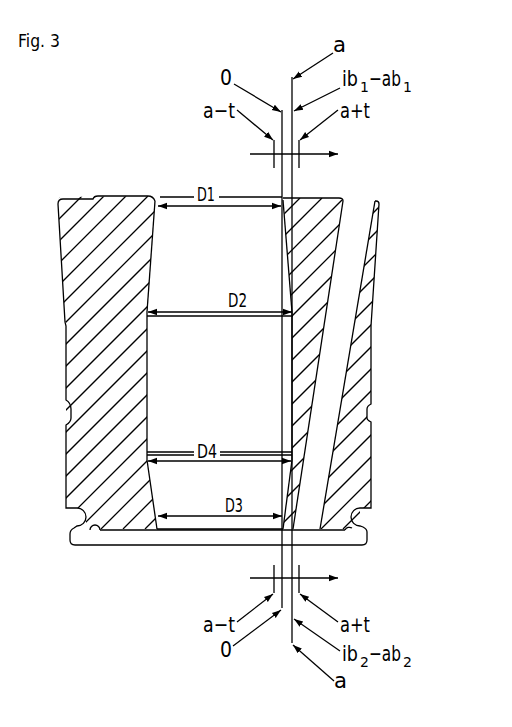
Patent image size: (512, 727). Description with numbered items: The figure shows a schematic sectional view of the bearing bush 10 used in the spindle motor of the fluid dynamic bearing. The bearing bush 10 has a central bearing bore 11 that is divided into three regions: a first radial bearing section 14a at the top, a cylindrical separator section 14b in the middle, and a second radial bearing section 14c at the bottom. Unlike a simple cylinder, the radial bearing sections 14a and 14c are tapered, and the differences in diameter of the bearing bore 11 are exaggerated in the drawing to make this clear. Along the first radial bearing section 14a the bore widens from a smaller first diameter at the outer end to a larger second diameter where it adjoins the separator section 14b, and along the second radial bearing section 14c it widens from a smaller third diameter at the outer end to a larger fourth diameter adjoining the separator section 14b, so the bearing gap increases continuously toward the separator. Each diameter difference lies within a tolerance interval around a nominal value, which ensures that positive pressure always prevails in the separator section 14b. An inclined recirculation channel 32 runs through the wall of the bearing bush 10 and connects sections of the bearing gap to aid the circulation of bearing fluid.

The bearing bush 10 is at (352, 445).
The bearing bore 11 is at (277, 377).
The first radial bearing section 14a is at (288, 268).
The separator section 14b is at (288, 343).
The second radial bearing section 14c is at (277, 489).
The recirculation channel 32 is at (360, 229).